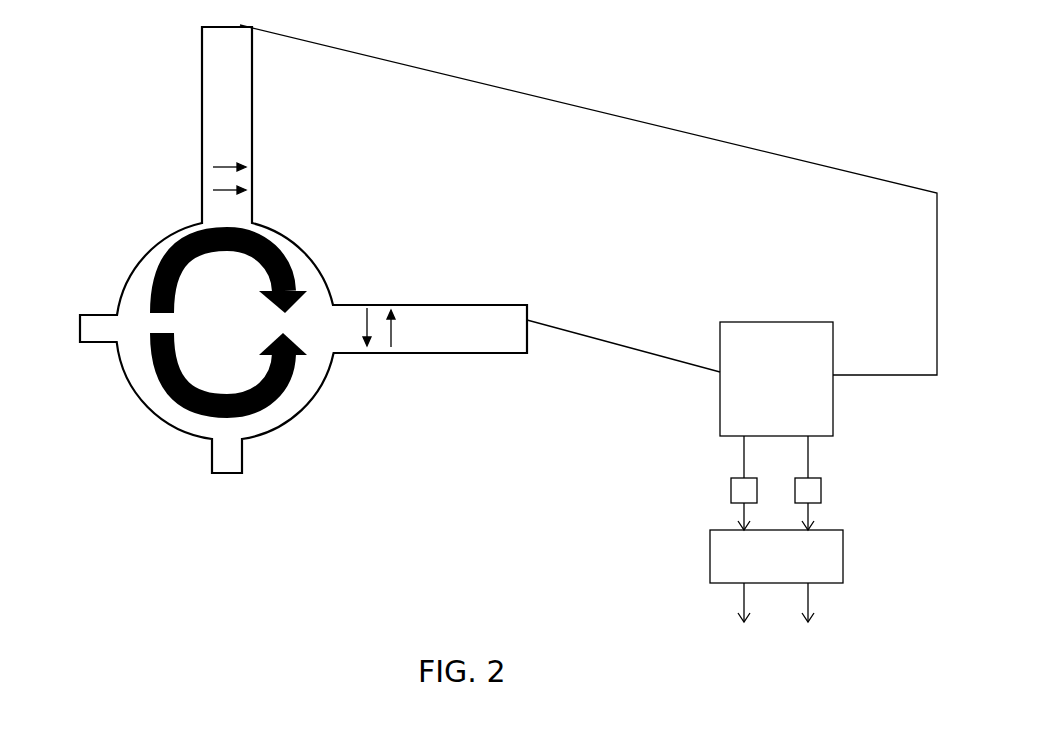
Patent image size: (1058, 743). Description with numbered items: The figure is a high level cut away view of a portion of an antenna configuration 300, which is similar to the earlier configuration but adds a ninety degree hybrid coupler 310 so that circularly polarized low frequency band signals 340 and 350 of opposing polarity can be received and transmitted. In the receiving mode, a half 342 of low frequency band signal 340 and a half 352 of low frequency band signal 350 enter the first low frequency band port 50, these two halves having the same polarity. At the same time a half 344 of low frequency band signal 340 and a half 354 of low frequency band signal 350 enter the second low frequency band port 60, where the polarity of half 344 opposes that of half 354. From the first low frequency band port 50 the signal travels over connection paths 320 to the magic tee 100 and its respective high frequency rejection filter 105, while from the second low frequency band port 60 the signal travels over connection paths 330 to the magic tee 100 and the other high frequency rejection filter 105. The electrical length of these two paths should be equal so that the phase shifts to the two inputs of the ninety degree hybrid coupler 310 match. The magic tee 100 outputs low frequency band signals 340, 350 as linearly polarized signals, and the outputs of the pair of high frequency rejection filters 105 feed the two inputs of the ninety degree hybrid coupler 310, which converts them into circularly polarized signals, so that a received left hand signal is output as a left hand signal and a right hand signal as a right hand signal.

The antenna configuration 300 is at (858, 61).
The connection paths 320 is at (663, 127).
The connection paths 330 is at (653, 357).
The magic tee 100 is at (833, 412).
The high frequency rejection filters 105 is at (731, 491).
The 90 degree hybrid coupler 310 is at (843, 556).
The first low frequency band port 50 is at (248, 73).
The second low frequency band port 60 is at (452, 305).
The half of low frequency band signal 340 342 is at (227, 167).
The half of low frequency band signal 350 352 is at (225, 193).
The half of low frequency band signal 350 354 is at (367, 323).
The half of low frequency band signal 340 344 is at (393, 333).
The low frequency band signal 350 is at (260, 242).
The low frequency band signal 340 is at (262, 408).